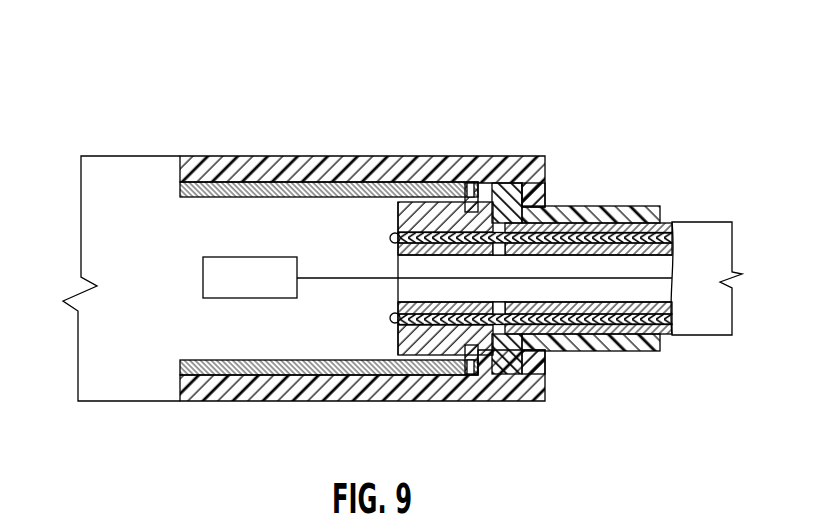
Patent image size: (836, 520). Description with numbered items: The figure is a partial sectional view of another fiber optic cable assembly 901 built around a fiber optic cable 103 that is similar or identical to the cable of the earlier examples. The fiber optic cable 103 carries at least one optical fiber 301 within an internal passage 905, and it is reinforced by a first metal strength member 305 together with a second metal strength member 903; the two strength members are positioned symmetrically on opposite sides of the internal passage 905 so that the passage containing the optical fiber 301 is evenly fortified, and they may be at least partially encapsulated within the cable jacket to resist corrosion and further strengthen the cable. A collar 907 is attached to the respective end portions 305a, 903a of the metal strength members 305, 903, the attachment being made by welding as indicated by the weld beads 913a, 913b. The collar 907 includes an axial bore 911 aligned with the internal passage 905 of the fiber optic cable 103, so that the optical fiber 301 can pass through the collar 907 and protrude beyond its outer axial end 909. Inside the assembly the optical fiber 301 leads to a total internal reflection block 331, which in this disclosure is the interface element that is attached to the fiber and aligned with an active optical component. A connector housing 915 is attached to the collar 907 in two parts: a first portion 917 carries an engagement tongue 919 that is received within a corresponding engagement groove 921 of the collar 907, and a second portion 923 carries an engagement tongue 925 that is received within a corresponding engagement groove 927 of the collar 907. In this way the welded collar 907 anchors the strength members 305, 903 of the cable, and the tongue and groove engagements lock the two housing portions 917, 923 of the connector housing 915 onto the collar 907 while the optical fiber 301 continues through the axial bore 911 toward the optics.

The fiber optic cable 103 is at (732, 222).
The optical fiber 301 is at (313, 278).
The first metal strength member 305 is at (606, 232).
The end portion of first metal strength member 305a is at (412, 242).
The total internal reflection block 331 is at (212, 280).
The fiber optic cable assembly 901 is at (594, 117).
The second metal strength member 903 is at (630, 318).
The end portion of second metal strength member 903a is at (470, 375).
The internal passage 905 is at (530, 301).
The collar 907 is at (365, 204).
The outer axial end 909 is at (387, 338).
The axial bore 911 is at (422, 300).
The weld bead 913a is at (390, 236).
The weld bead 913b is at (390, 317).
The connector housing 915 is at (184, 154).
The first portion 917 is at (206, 183).
The engagement tongue 919 is at (520, 178).
The engagement groove 921 is at (497, 192).
The second portion 923 is at (183, 160).
The engagement tongue 925 is at (497, 398).
The engagement groove 927 is at (528, 401).